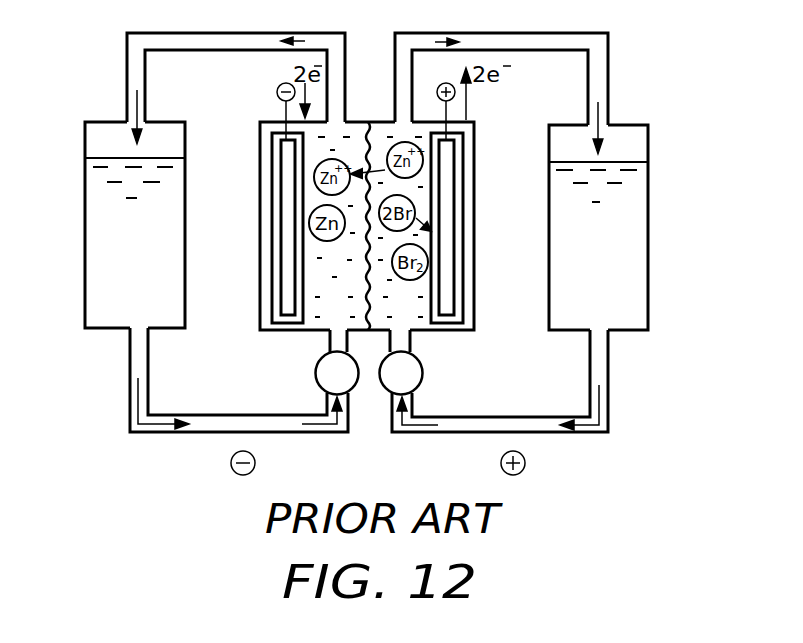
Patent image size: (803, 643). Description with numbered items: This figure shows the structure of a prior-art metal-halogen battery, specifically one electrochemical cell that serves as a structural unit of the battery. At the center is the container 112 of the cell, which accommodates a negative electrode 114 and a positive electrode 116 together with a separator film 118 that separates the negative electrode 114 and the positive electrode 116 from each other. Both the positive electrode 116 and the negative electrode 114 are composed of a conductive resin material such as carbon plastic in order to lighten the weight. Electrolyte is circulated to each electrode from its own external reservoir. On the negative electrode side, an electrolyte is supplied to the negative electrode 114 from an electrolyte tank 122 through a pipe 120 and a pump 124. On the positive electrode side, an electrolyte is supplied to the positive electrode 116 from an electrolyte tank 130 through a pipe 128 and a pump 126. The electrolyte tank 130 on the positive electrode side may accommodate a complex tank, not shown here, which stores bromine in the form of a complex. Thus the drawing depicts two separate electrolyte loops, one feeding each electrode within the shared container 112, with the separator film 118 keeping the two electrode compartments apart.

The container 112 is at (278, 332).
The negative electrode 114 is at (272, 200).
The positive electrode 116 is at (463, 212).
The separator film 118 is at (368, 130).
The pipe 120 is at (177, 433).
The electrolyte tank 122 is at (175, 121).
The pump 124 is at (321, 392).
The pump 126 is at (424, 372).
The pipe 128 is at (552, 433).
The electrolyte tank 130 is at (638, 121).